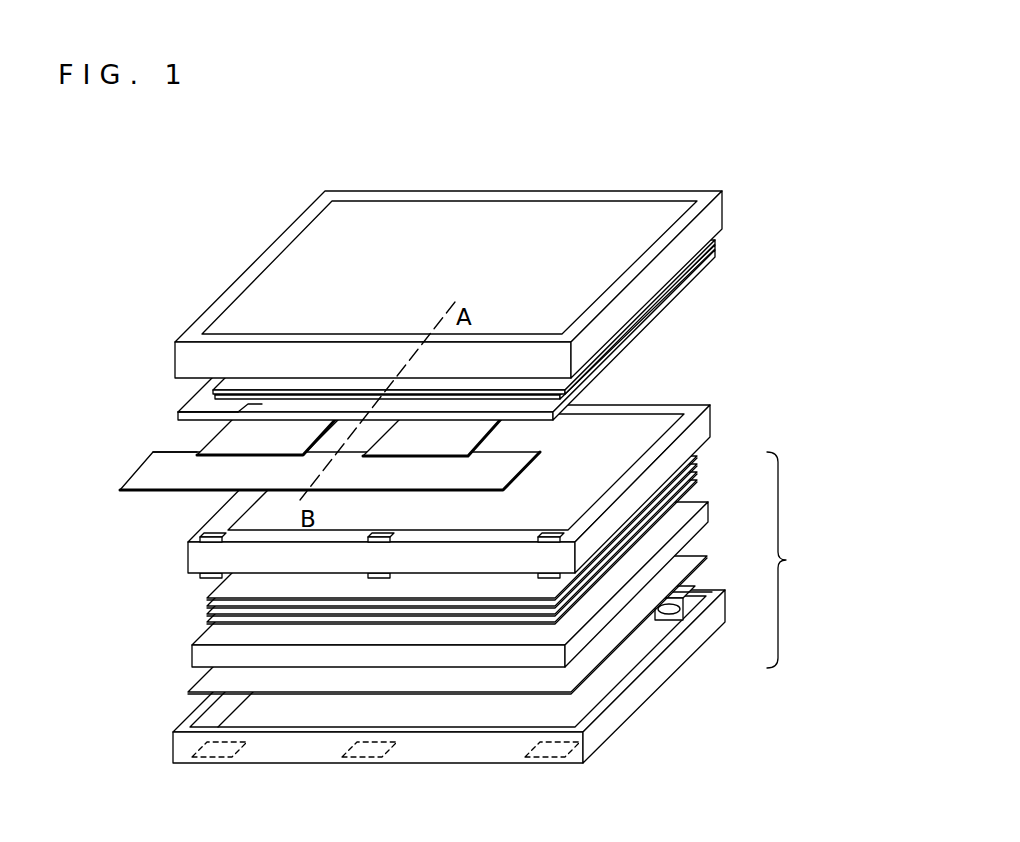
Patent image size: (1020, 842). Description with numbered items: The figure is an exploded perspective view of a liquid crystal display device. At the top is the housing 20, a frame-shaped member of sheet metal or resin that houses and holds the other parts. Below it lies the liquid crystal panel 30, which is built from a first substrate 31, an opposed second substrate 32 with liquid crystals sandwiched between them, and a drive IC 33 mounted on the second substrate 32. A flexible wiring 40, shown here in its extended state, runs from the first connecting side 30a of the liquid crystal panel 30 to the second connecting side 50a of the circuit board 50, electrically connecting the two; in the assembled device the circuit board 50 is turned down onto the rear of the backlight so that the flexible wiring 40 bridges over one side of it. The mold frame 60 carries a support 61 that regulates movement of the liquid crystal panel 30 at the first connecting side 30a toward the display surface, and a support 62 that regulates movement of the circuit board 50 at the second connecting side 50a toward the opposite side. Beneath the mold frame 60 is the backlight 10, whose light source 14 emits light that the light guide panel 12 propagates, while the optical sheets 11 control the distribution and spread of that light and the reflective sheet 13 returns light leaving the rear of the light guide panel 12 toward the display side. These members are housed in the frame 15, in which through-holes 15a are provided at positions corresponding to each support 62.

The backlight 10 is at (791, 560).
The optical sheets 11 is at (708, 452).
The light guide panel 12 is at (708, 511).
The reflective sheet 13 is at (697, 566).
The light source 14 is at (690, 603).
The frame 15 is at (695, 638).
The through-holes 15a is at (218, 750).
The housing 20 is at (718, 213).
The liquid crystal panel 30 is at (368, 341).
The first substrate 31 is at (213, 391).
The second substrate 32 is at (205, 397).
The drive IC 33 is at (258, 405).
The first connecting side 30a is at (186, 424).
The flexible wiring 40 is at (238, 434).
The circuit board 50 is at (120, 490).
The second connecting side 50a is at (163, 444).
The mold frame 60 is at (197, 558).
The support 61 is at (200, 536).
The support 62 is at (200, 577).